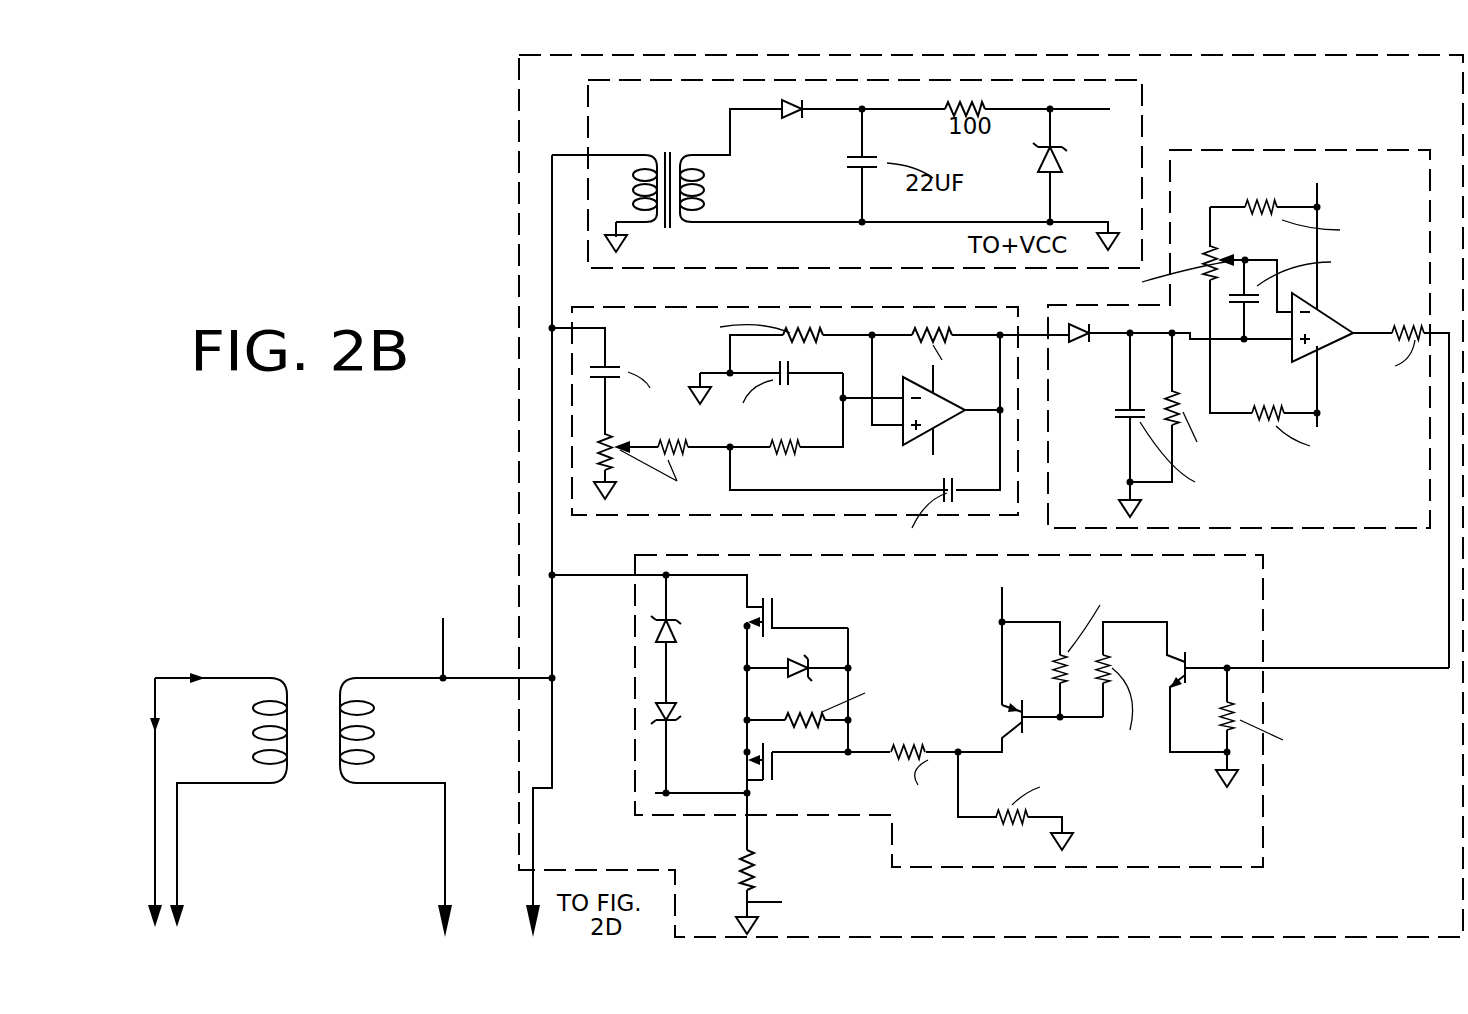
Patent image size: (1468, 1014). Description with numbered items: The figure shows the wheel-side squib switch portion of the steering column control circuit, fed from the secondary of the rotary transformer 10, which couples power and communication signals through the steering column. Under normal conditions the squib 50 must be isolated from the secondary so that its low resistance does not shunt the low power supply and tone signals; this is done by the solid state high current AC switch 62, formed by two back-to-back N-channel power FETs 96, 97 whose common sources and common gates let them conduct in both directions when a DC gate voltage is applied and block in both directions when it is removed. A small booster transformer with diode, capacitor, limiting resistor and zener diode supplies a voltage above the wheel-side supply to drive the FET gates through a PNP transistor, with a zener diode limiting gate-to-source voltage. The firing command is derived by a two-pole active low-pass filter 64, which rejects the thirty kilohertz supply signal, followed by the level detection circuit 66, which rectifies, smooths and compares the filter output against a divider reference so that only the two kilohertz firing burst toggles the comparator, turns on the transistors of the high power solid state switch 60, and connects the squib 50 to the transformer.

The rotary transformer 10 is at (340, 655).
The squib 50 is at (760, 876).
The high power solid state switch 60 is at (999, 744).
The solid state high current AC switch 62 is at (870, 657).
The low-pass filter 64 is at (572, 365).
The level detection circuit 66 is at (1380, 176).
The N-channel power FET 96 is at (776, 608).
The N-channel power FET 97 is at (770, 778).